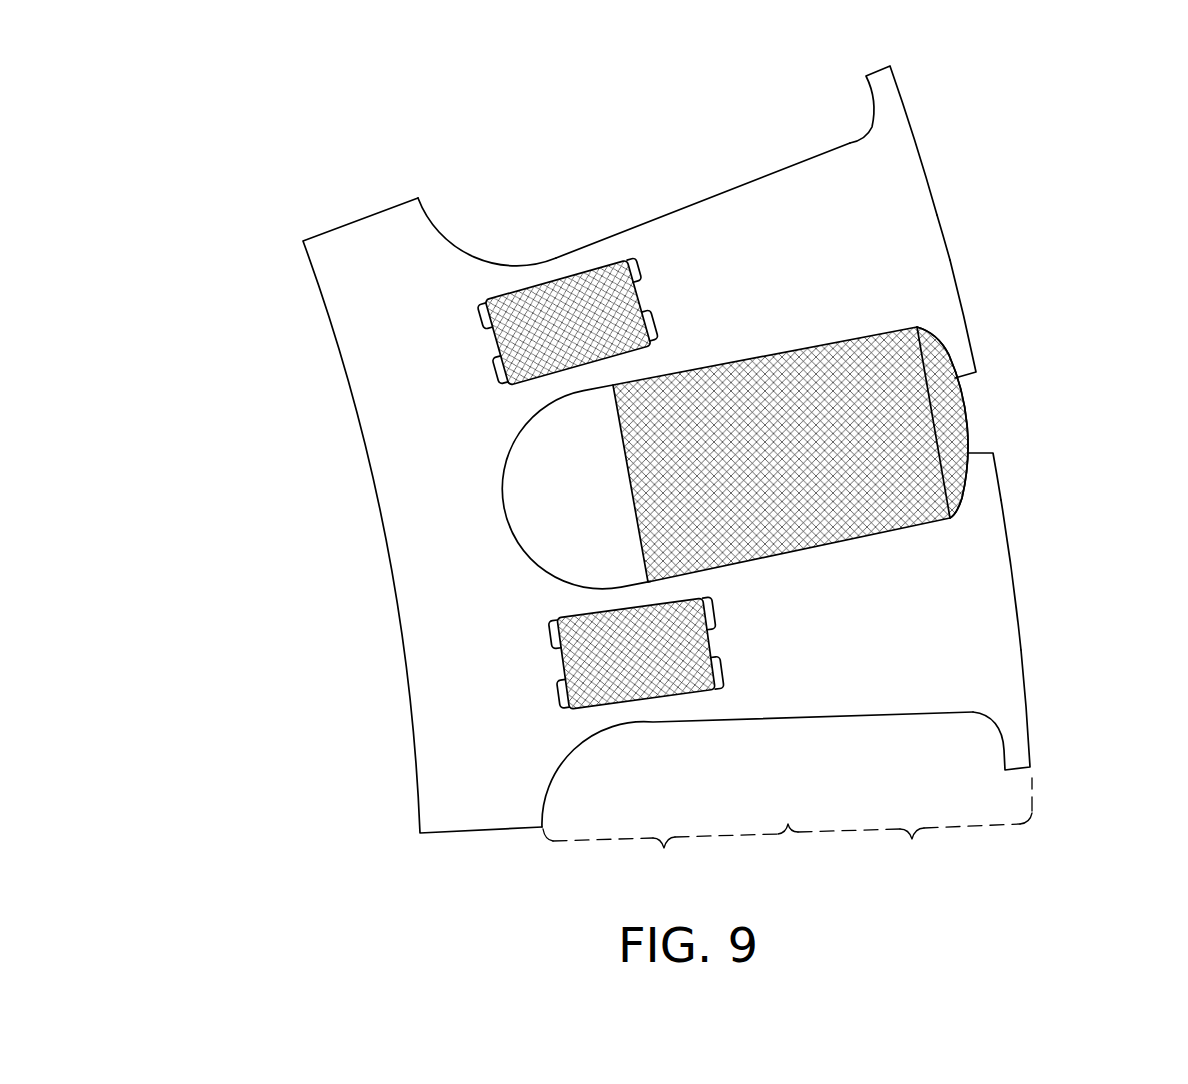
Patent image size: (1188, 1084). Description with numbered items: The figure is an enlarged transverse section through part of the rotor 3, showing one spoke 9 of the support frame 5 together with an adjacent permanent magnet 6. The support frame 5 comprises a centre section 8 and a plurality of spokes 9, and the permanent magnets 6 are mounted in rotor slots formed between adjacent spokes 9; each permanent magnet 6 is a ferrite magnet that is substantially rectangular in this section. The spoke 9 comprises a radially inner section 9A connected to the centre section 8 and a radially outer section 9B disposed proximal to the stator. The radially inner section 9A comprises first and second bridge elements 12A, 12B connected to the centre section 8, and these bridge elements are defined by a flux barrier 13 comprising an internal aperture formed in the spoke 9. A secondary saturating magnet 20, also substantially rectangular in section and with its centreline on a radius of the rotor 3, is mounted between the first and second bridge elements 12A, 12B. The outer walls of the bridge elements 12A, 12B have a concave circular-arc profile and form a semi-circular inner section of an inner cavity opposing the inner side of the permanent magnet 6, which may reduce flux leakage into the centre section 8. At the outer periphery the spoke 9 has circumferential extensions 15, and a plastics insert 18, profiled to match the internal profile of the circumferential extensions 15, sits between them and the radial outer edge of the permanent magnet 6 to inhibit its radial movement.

The rotor 3 is at (298, 757).
The support frame 5 is at (390, 612).
The permanent magnet 6 is at (876, 454).
The centre section 8 is at (407, 510).
The spoke 9 is at (875, 228).
The radially inner section 9A is at (670, 852).
The radially outer section 9B is at (915, 825).
The first bridge element 12A is at (543, 263).
The second bridge element 12B is at (570, 381).
The flux barrier 13 is at (603, 260).
The circumferential extensions 15 is at (893, 108).
The insert 18 is at (950, 419).
The secondary magnet 20 is at (622, 293).